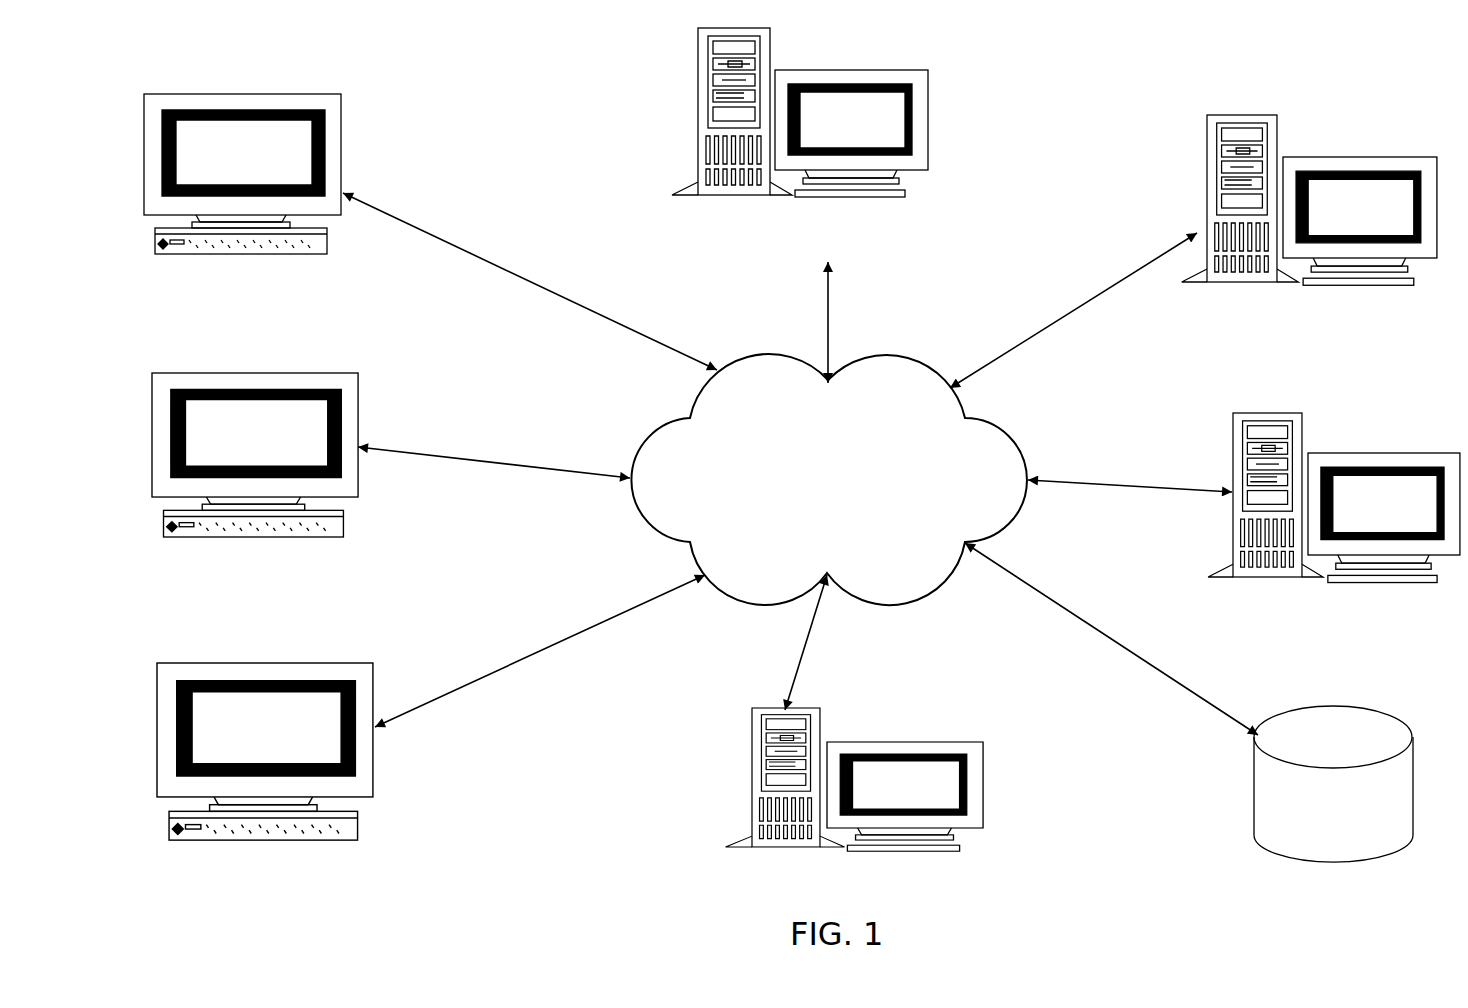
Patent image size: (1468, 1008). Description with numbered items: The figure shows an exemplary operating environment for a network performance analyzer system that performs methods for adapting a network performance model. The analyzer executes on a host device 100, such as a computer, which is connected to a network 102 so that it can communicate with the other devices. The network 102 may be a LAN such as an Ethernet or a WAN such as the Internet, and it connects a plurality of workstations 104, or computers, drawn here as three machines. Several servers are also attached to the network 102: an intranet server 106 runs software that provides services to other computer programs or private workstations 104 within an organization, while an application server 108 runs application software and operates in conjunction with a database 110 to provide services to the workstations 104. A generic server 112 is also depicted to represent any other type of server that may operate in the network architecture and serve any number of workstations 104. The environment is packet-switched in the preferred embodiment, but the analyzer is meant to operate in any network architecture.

The host device 100 is at (928, 96).
The network 102 is at (1010, 430).
The workstations 104 is at (341, 130).
The intranet server 106 is at (1350, 156).
The application server 108 is at (1365, 452).
The database 110 is at (1310, 704).
The generic server 112 is at (985, 770).